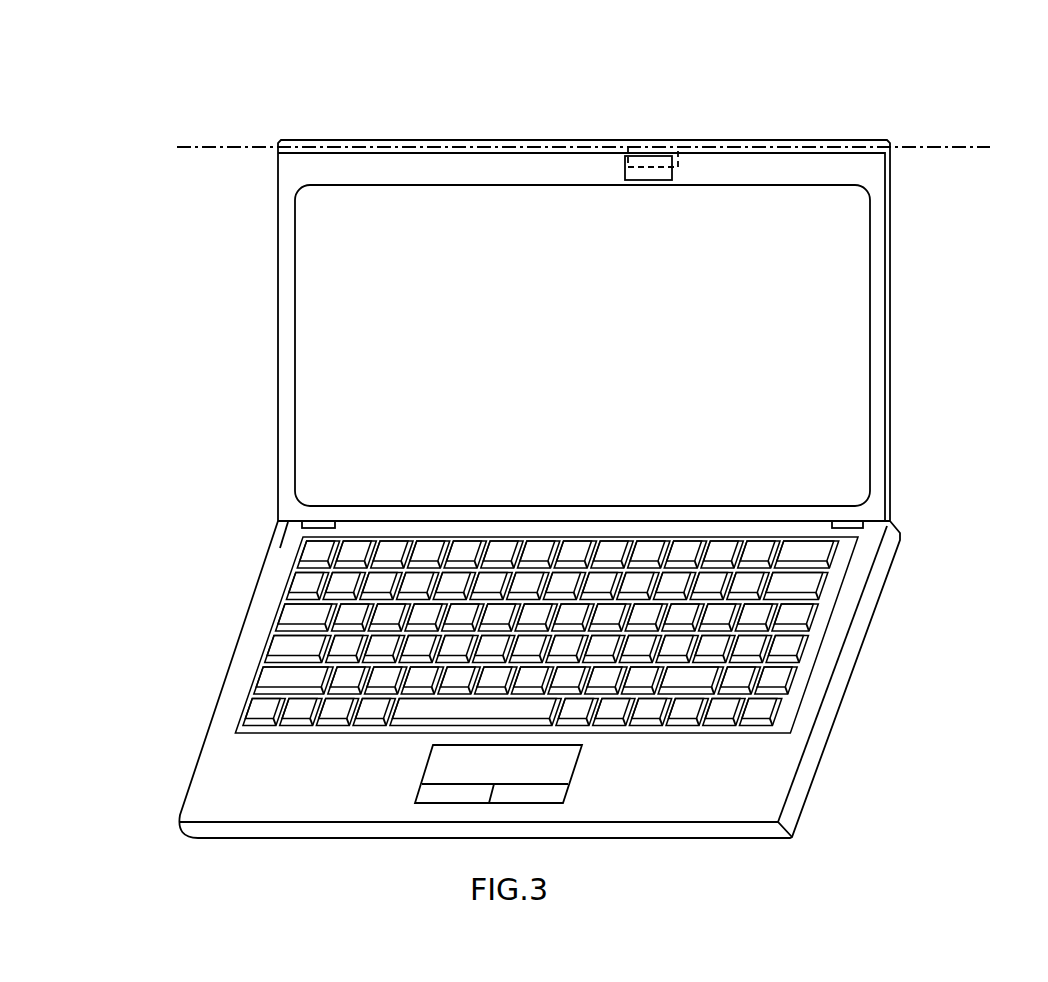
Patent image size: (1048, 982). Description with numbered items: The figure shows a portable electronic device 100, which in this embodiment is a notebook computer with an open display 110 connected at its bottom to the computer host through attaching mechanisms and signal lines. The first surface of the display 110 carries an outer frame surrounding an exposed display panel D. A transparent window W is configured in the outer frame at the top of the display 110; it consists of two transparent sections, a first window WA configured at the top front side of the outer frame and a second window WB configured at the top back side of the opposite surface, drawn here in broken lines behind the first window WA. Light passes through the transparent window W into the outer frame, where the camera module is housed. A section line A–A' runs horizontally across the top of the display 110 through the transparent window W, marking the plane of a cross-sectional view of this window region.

The portable electronic device 100 is at (83, 99).
The display 110 is at (812, 140).
The display D is at (323, 335).
The transparent window W is at (742, 71).
The first window WA is at (624, 167).
The second window WB is at (678, 162).
The section line A is at (571, 122).
The section line A' is at (997, 122).